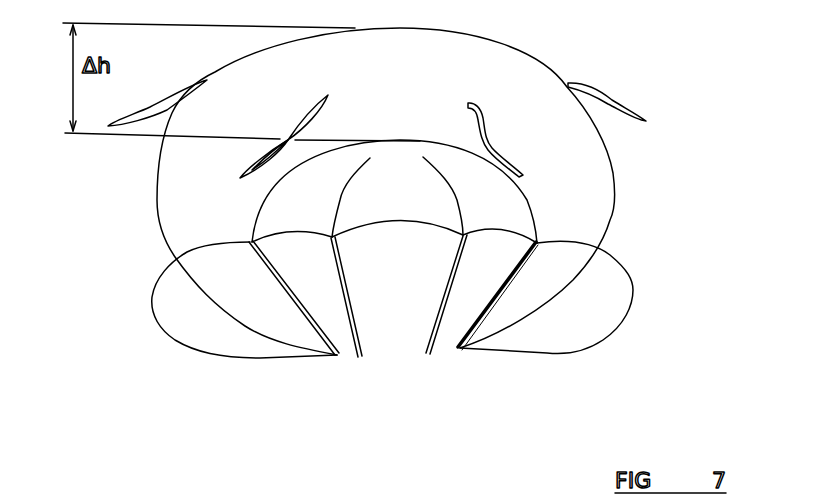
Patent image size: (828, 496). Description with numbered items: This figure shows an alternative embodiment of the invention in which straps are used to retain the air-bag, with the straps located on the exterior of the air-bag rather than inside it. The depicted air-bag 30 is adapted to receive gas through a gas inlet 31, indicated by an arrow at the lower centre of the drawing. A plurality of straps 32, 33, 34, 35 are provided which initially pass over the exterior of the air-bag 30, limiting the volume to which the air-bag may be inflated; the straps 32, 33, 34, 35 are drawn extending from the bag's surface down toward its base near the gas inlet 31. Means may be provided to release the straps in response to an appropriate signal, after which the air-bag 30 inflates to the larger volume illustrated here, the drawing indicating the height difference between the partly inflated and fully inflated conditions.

The air-bag 30 is at (636, 290).
The gas inlet 31 is at (395, 361).
The strap 32 is at (122, 127).
The strap 33 is at (365, 337).
The strap 34 is at (445, 308).
The strap 35 is at (646, 119).